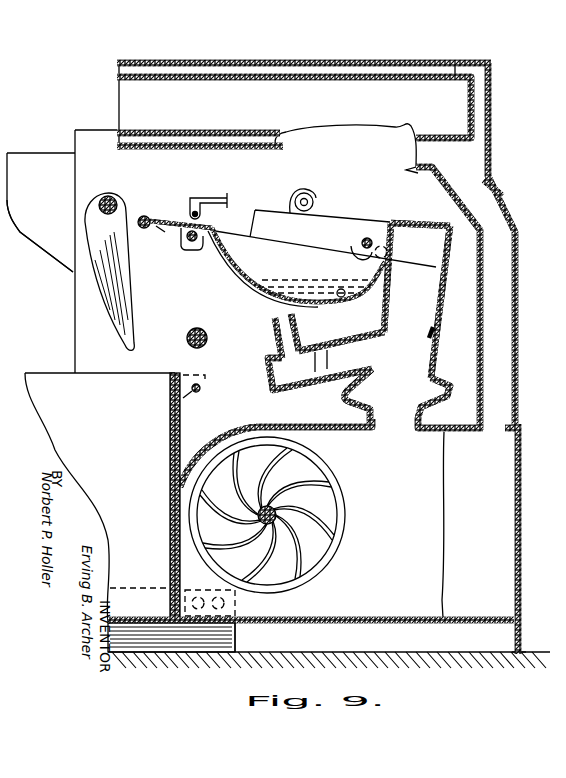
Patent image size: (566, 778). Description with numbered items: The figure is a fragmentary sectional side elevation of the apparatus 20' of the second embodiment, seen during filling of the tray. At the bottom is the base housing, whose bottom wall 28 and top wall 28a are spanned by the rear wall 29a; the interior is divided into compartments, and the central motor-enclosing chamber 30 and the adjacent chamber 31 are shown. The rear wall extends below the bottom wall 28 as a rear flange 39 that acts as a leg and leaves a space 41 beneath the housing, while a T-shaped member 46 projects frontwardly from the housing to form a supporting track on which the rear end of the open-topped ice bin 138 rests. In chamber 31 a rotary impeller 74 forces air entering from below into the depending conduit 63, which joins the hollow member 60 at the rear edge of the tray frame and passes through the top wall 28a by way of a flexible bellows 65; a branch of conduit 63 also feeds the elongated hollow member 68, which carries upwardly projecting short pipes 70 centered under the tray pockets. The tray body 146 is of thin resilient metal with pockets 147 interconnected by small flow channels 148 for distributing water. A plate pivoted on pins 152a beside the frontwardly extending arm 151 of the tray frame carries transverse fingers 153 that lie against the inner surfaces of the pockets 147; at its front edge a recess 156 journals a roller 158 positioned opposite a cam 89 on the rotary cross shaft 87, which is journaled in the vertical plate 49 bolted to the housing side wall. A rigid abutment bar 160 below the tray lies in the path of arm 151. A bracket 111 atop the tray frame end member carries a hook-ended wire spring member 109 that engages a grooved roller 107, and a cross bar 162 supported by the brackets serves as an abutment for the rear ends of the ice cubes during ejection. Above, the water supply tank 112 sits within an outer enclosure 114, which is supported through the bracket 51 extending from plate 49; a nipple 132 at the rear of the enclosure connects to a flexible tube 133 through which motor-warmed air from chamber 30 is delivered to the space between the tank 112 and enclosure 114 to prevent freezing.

The apparatus 20' is at (204, 28).
The outer enclosure 114 is at (316, 60).
The water supply tank 112 is at (267, 82).
The nipple 132 is at (499, 188).
The flexible tube 133 is at (519, 292).
The rear wall 29a is at (520, 555).
The central chamber 30 is at (490, 528).
The chamber 31 is at (390, 528).
The hollow member 60 is at (412, 224).
The conduit 63 is at (438, 308).
The flexible bellows 65 is at (437, 400).
The cross bar 162 is at (370, 238).
The flow channels 148 is at (352, 254).
The bracket 111 is at (352, 228).
The grooved roller 107 is at (314, 204).
The wire spring member 109 is at (298, 190).
The tray body 146 is at (253, 290).
The fingers 153 is at (236, 259).
The pockets 147 is at (344, 296).
The roller 158 is at (148, 216).
The recess 156 is at (160, 228).
The arm 151 is at (170, 250).
The pins 152a is at (190, 242).
The cams 89 is at (113, 300).
The cross shaft 87 is at (116, 200).
The abutment bar 160 is at (190, 332).
The short pipes 70 is at (272, 336).
The hollow member 68 is at (268, 370).
The top wall 28a is at (345, 432).
The vertical plate 49 is at (75, 326).
The bracket 51 is at (43, 255).
The bin 138 is at (170, 455).
The rotary impeller 74 is at (325, 552).
The bottom wall 28 is at (394, 622).
The rear flange 39 is at (520, 648).
The space 41 is at (323, 645).
The T-shaped member 46 is at (162, 640).